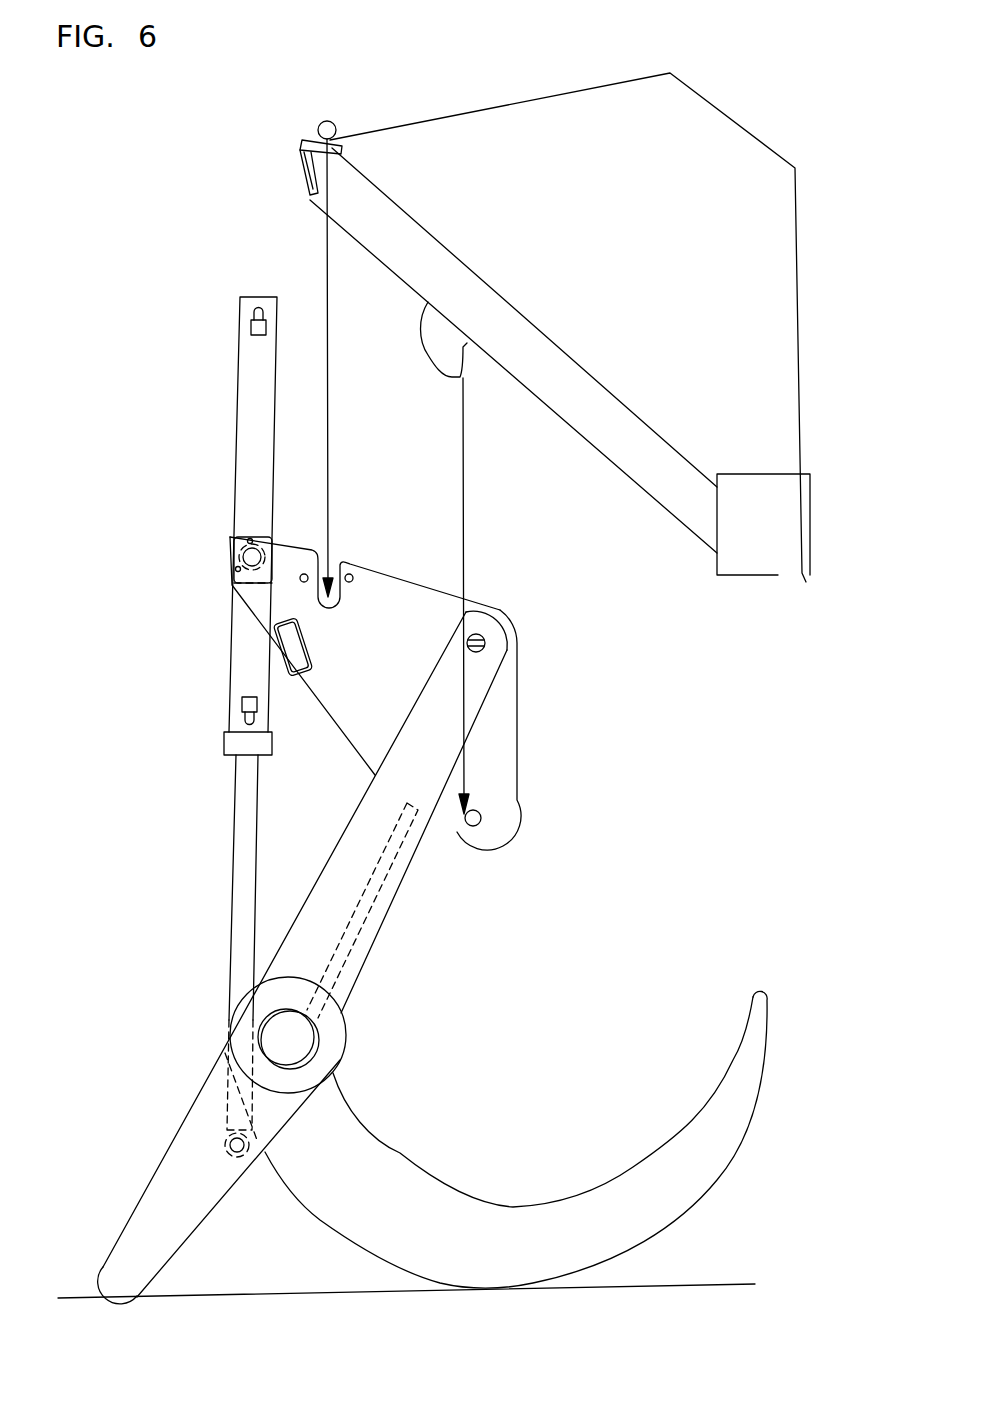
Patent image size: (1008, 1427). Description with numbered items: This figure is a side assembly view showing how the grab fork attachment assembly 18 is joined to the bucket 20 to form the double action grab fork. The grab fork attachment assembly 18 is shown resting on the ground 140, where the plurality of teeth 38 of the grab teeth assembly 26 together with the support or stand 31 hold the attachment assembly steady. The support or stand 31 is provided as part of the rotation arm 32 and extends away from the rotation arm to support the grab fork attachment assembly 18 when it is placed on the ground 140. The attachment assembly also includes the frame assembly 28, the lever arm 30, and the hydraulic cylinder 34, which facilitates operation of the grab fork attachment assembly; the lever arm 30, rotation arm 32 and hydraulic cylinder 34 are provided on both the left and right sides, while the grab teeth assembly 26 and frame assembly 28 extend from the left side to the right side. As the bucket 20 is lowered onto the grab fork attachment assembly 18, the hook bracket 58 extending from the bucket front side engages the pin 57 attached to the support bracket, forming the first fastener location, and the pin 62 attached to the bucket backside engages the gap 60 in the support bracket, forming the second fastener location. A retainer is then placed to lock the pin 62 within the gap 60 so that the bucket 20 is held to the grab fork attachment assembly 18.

The grab fork attachment assembly 18 is at (185, 832).
The bucket 20 is at (513, 152).
The grab teeth assembly 26 is at (523, 1226).
The frame assembly 28 is at (516, 745).
The lever arm 30 is at (390, 883).
The support or stand 31 is at (137, 1240).
The rotation arm 32 is at (210, 1097).
The hydraulic cylinder 34 is at (250, 465).
The teeth 38 is at (420, 1200).
The pin 57 is at (482, 823).
The hook bracket 58 is at (437, 340).
The gap 60 is at (336, 560).
The pin 62 is at (330, 124).
The ground 140 is at (73, 1293).